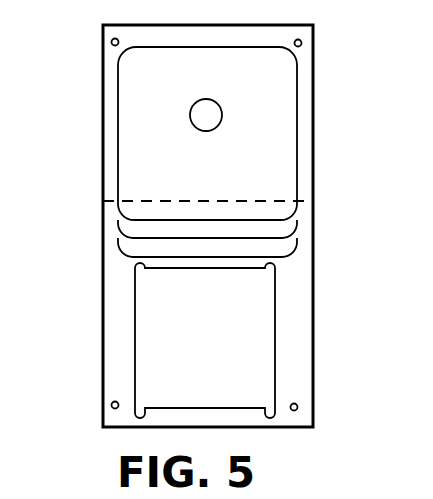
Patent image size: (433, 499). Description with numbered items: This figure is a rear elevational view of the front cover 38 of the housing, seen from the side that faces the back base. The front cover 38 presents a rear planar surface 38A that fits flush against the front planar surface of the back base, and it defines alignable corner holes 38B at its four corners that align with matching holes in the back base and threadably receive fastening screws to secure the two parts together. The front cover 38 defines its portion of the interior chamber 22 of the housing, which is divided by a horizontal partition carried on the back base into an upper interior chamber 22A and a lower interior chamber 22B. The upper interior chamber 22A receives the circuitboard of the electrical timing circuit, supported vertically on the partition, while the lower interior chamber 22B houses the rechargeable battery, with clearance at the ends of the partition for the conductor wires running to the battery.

The front cover 38 is at (318, 97).
The rear planar surface 38A is at (298, 317).
The alignable corner holes 38B is at (112, 43).
The interior chamber 22 is at (247, 232).
The upper interior chamber 22A is at (210, 176).
The lower interior chamber 22B is at (205, 362).